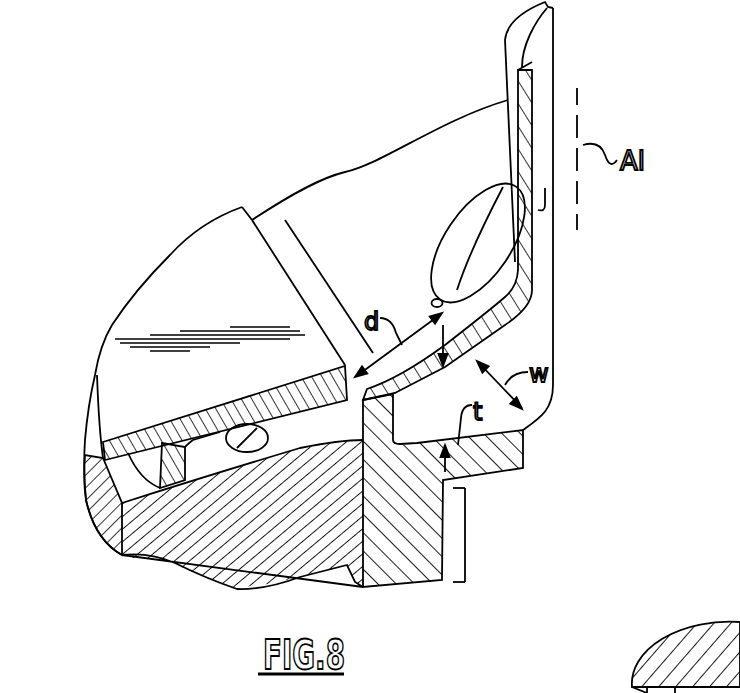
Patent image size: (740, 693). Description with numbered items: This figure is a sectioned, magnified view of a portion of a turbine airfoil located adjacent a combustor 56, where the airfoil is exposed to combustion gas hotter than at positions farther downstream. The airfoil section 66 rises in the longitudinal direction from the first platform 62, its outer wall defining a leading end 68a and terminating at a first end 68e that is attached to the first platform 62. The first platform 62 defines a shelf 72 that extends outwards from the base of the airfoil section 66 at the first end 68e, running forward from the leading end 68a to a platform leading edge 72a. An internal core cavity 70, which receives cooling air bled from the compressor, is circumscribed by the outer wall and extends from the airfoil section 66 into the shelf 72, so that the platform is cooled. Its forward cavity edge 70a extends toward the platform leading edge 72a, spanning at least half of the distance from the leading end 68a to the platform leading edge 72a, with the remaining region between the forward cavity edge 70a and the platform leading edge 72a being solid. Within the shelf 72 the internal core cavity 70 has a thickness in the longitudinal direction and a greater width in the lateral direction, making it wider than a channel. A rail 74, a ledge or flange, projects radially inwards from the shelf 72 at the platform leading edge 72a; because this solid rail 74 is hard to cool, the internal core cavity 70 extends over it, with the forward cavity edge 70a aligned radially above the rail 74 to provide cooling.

The combustor 56 is at (145, 369).
The first platform 62 is at (338, 168).
The airfoil section 66 is at (505, 55).
The leading end 68a is at (518, 90).
The first end 68e is at (442, 302).
The internal core cavity 70 is at (545, 190).
The forward cavity edge 70a is at (417, 443).
The shelf 72 is at (315, 222).
The platform leading edge 72a is at (328, 388).
The rail 74 is at (465, 535).